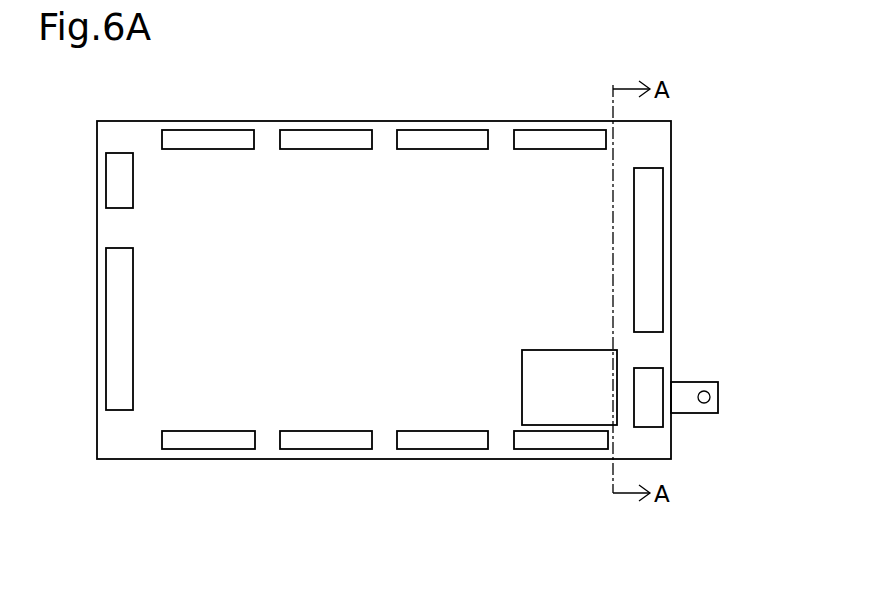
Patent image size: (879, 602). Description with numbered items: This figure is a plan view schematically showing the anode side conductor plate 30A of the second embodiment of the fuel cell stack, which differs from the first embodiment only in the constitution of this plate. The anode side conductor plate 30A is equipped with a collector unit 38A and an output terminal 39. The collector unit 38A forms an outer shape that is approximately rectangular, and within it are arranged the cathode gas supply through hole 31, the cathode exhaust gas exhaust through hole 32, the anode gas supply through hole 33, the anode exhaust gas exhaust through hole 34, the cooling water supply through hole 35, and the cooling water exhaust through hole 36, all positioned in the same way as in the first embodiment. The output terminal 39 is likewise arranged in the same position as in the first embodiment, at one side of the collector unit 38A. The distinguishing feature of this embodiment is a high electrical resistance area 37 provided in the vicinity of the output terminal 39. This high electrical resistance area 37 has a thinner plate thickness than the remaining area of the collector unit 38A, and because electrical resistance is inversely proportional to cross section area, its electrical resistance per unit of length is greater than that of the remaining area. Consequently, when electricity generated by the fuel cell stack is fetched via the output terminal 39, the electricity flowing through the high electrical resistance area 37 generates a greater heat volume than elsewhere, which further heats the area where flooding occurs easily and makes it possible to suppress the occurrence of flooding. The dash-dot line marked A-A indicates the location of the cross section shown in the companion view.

The anode side conductor plate 30A is at (750, 387).
The cathode gas supply through hole 31 is at (556, 140).
The cathode exhaust gas exhaust through hole 32 is at (556, 441).
The anode gas supply through hole 33 is at (112, 187).
The anode exhaust gas exhaust through hole 34 is at (655, 417).
The cooling water supply through hole 35 is at (652, 190).
The cooling water exhaust through hole 36 is at (112, 316).
The high electrical resistance area 37 is at (574, 420).
The collector unit 38A is at (672, 366).
The output terminal 39 is at (719, 395).